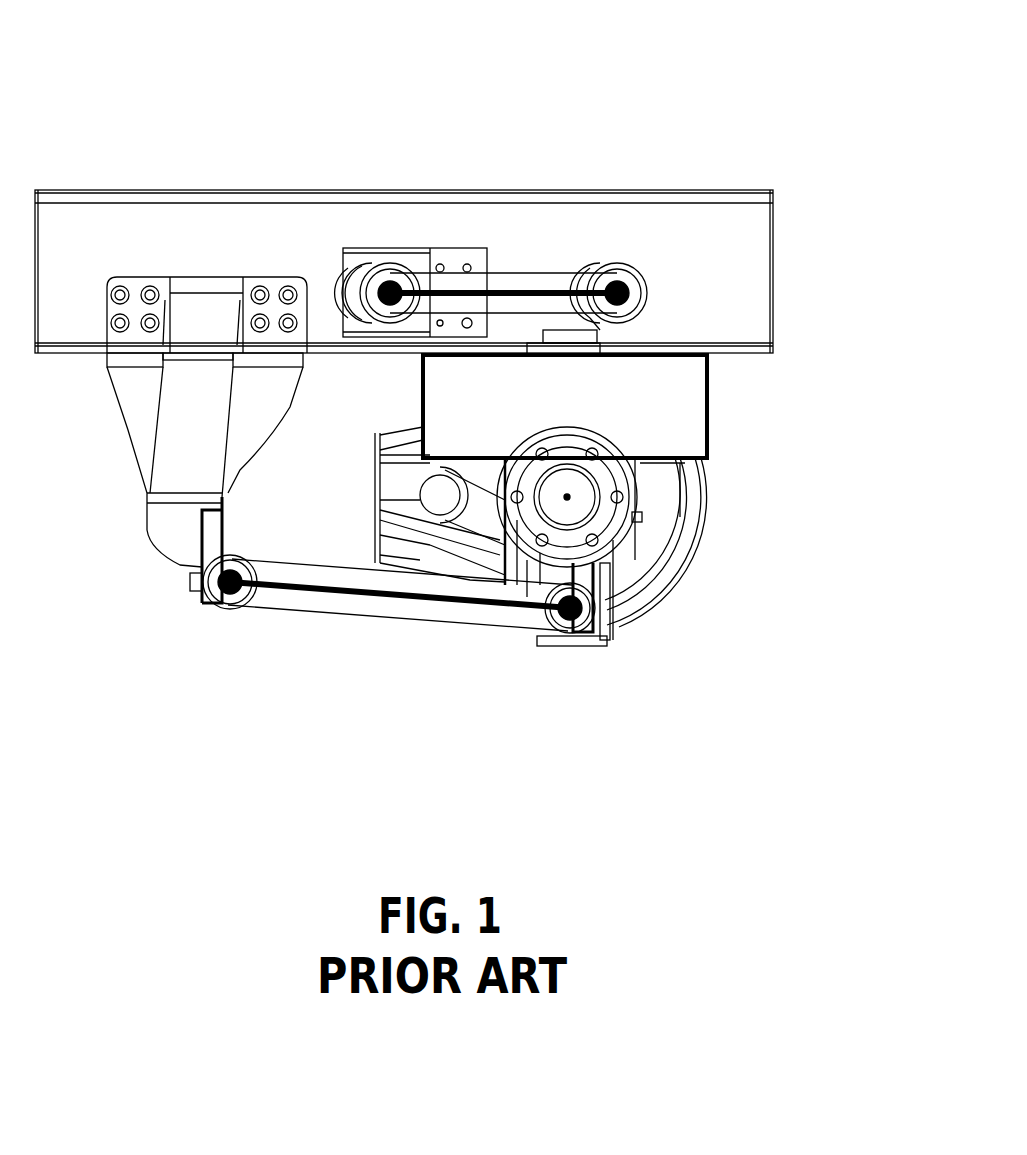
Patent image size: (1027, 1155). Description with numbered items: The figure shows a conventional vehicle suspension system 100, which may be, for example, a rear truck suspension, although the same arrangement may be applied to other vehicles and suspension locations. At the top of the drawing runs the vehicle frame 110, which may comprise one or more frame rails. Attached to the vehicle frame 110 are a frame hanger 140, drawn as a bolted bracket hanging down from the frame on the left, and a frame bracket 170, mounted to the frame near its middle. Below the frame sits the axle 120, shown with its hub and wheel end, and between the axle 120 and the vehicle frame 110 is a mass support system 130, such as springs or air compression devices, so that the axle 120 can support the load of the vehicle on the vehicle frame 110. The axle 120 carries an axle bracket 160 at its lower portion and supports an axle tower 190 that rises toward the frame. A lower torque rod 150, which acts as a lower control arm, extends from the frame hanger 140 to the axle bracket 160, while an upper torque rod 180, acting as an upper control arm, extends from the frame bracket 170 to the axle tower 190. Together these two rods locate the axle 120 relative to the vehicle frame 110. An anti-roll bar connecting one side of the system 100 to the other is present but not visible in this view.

The vehicle suspension system 100 is at (248, 88).
The vehicle frame 110 is at (723, 241).
The axle 120 is at (615, 522).
The mass support system 130 is at (688, 418).
The frame hanger 140 is at (165, 455).
The lower torque rod 150 is at (308, 603).
The axle bracket 160 is at (592, 577).
The frame bracket 170 is at (420, 252).
The upper torque rod 180 is at (496, 312).
The axle tower 190 is at (592, 333).